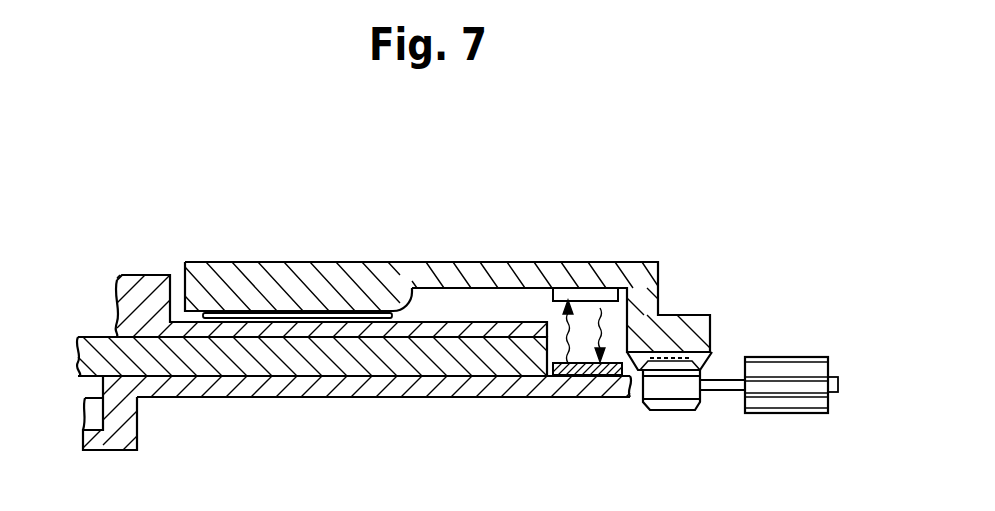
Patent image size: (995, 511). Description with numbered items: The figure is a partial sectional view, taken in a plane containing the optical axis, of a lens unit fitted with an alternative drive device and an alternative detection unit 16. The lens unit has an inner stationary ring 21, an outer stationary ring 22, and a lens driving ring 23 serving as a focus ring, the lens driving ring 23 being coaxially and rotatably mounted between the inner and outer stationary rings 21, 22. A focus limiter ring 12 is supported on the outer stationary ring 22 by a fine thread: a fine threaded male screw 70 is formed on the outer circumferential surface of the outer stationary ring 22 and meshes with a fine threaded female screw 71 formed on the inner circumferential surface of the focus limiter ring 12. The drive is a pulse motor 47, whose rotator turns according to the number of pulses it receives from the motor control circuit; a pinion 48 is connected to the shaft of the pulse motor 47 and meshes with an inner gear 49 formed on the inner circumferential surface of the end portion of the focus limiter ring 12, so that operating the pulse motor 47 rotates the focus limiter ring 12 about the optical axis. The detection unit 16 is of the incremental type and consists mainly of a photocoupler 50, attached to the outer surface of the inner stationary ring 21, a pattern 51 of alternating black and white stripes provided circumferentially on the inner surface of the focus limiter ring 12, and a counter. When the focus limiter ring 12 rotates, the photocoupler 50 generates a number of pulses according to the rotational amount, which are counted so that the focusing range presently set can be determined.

The focus limiter ring 12 is at (660, 278).
The detection unit 16 is at (663, 154).
The inner stationary ring 21 is at (470, 383).
The outer stationary ring 22 is at (141, 275).
The lens driving ring 23 is at (92, 350).
The pulse motor 47 is at (792, 357).
The pinion 48 is at (670, 410).
The inner gear 49 is at (708, 362).
The photocoupler 50 is at (587, 363).
The pattern 51 is at (593, 287).
The fine threaded male screw 70 is at (407, 322).
The fine threaded female screw 71 is at (378, 264).